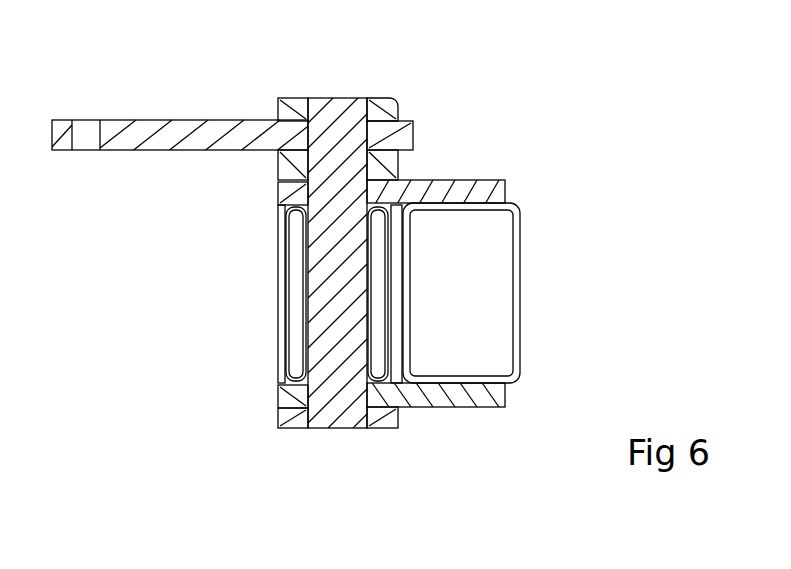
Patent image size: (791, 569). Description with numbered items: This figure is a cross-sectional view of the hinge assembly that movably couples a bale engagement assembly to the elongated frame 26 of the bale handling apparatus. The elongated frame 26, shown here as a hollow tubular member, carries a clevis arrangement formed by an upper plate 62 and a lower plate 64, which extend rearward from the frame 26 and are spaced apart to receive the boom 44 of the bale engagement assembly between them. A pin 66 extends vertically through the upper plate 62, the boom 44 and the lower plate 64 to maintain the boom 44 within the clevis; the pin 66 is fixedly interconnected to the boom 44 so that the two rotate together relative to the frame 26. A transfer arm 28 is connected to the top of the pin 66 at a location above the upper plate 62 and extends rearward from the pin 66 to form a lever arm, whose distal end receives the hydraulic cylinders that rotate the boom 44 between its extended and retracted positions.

The transfer arm 28 is at (180, 97).
The pin 66 is at (332, 223).
The upper plate 62 is at (451, 134).
The lower plate 64 is at (451, 433).
The boom 44 is at (271, 294).
The elongated frame 26 is at (478, 307).